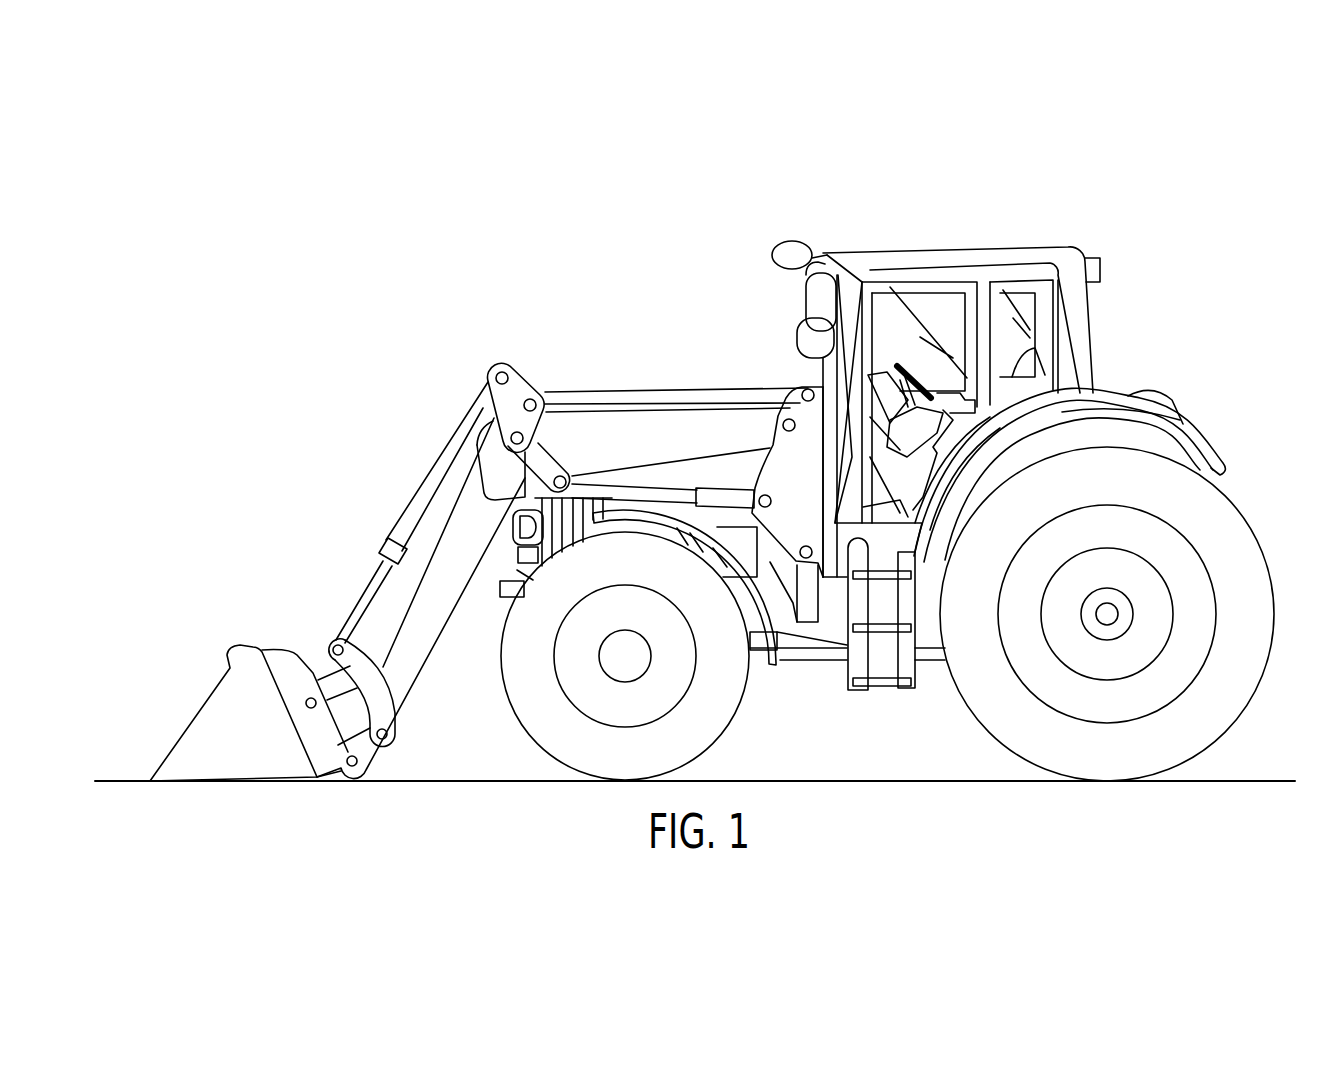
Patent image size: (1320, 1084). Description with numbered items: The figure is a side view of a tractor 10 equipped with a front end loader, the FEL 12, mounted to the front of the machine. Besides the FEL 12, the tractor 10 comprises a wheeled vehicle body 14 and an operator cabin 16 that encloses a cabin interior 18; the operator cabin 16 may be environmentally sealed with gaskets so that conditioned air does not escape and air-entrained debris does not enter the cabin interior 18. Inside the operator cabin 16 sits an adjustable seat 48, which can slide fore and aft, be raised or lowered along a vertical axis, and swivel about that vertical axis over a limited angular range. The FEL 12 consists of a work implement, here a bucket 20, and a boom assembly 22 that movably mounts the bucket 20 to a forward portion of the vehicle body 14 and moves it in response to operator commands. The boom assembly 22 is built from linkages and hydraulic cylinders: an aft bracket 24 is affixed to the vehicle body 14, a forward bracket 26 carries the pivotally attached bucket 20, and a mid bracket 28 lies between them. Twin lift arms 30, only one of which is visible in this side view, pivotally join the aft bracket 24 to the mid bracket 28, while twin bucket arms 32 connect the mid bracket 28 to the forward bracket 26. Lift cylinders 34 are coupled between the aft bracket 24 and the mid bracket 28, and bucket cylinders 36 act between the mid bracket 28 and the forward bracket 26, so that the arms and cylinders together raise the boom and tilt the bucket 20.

The tractor 10 is at (1090, 226).
The FEL 12 is at (509, 356).
The wheeled vehicle body 14 is at (1197, 443).
The operator cabin 16 is at (1006, 252).
The cabin interior 18 is at (953, 327).
The bucket 20 is at (207, 722).
The boom assembly 22 is at (438, 637).
The aft bracket 24 is at (799, 410).
The forward bracket 26 is at (287, 663).
The mid bracket 28 is at (487, 443).
The lift arms 30 is at (617, 455).
The bucket arms 32 is at (487, 545).
The lift cylinders 34 is at (696, 486).
The bucket cylinders 36 is at (400, 537).
The adjustable seat 48 is at (1030, 352).